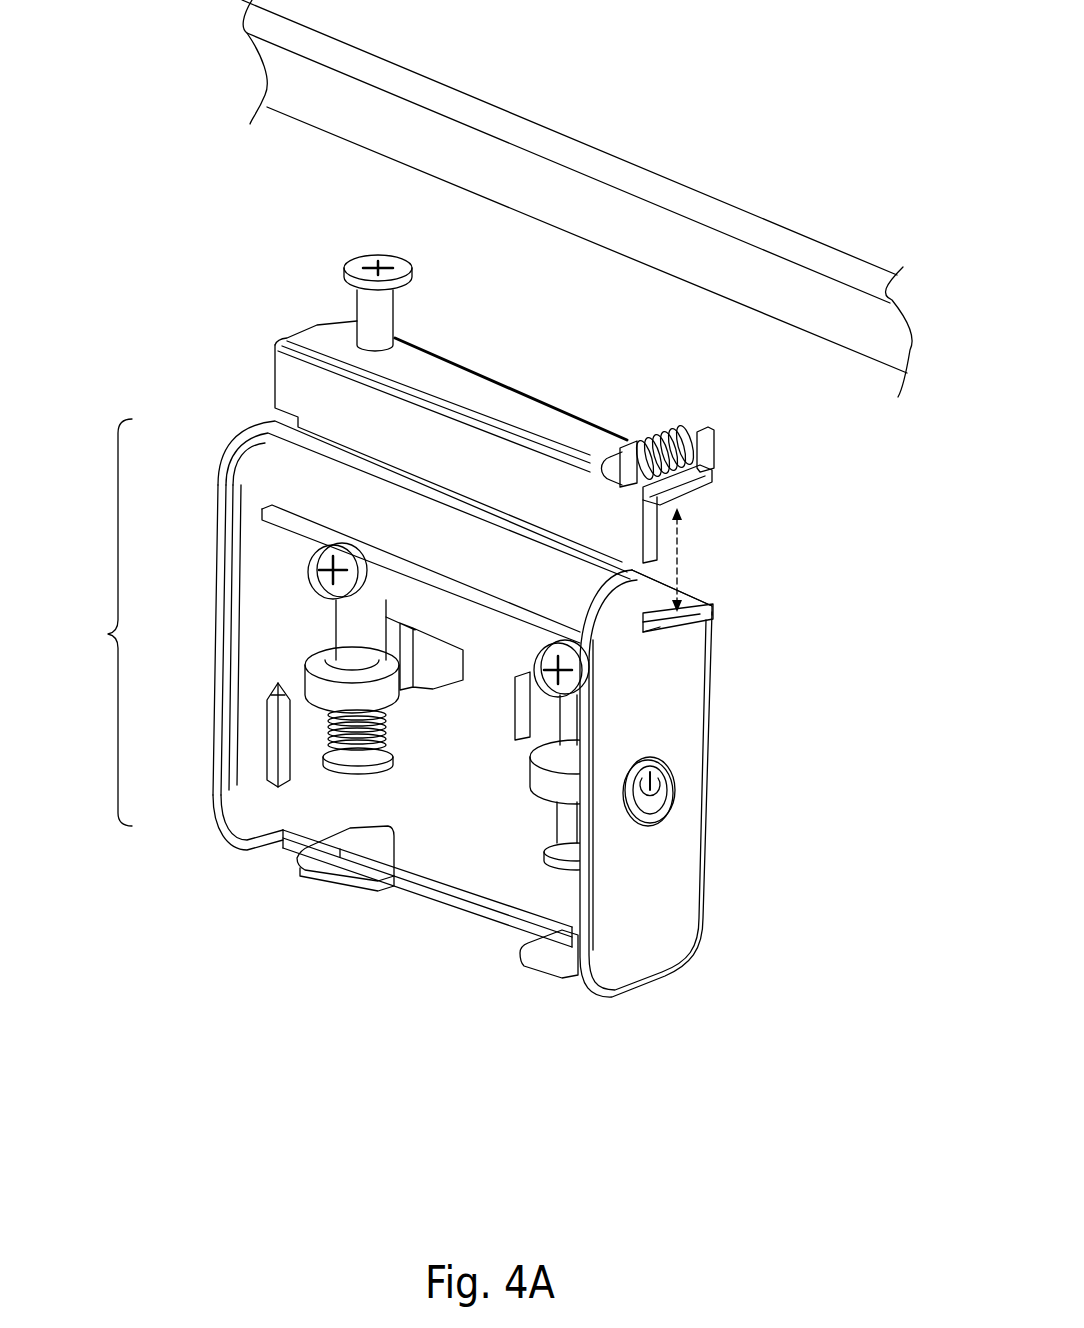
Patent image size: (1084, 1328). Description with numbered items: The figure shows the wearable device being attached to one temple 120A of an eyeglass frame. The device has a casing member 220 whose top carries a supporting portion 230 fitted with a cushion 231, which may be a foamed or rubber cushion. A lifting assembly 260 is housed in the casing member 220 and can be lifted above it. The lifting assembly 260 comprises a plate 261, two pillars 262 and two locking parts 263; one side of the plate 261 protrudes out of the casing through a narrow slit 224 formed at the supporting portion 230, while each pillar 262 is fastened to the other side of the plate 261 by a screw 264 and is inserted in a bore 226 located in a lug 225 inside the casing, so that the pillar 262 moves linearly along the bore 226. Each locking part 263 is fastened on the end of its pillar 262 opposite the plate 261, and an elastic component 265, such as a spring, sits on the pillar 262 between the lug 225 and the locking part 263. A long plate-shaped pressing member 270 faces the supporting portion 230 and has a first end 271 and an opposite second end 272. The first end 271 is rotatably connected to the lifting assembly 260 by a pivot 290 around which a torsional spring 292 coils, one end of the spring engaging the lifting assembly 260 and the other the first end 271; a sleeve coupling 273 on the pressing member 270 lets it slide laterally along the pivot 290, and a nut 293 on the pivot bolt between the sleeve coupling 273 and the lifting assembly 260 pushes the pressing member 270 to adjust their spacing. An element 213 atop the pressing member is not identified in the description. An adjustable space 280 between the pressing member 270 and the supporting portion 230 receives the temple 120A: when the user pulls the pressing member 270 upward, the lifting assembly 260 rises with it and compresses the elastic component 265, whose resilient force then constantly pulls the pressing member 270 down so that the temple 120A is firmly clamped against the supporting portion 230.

The temple 120A is at (818, 236).
The screw 213 is at (355, 267).
The second end 272 is at (317, 333).
The pressing member 270 is at (497, 395).
The nut 293 is at (623, 433).
The torsional spring 292 is at (680, 430).
The pivot 290 is at (687, 422).
The sleeve coupling 273 is at (710, 440).
The first end 271 is at (710, 482).
The adjustable space 280 is at (680, 557).
The supporting portion 230 is at (713, 603).
The cushion 231 is at (710, 614).
The narrow slit 224 is at (649, 632).
The bore 226 is at (569, 764).
The lug 225 is at (599, 786).
The casing member 220 is at (704, 888).
The elastic component 265 is at (387, 793).
The screw 264 is at (315, 565).
The pillar 262 is at (357, 641).
The plate 261 is at (288, 393).
The locking part 263 is at (333, 767).
The lifting assembly 260 is at (97, 622).